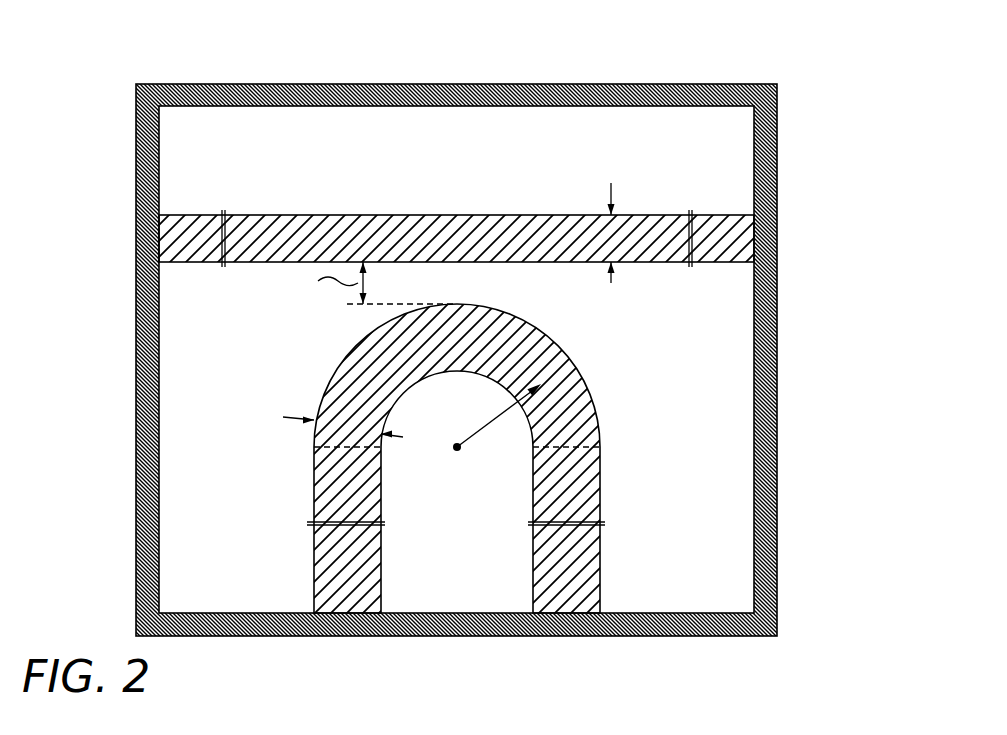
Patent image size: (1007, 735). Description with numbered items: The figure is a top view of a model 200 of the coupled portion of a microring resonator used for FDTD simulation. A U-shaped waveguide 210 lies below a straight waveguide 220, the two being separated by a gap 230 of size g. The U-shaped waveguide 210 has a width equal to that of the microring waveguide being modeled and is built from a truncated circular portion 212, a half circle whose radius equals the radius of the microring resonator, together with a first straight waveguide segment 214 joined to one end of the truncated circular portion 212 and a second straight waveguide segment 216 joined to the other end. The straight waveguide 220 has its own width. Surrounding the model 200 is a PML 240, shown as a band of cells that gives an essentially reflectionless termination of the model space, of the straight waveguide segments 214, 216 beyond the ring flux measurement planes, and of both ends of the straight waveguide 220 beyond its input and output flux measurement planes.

The model of a coupled portion of a microring resonator 200 is at (511, 319).
The U-shaped waveguide 210 is at (478, 458).
The truncated circular portion 212 is at (342, 372).
The first straight waveguide segment 214 is at (314, 572).
The second straight waveguide segment 216 is at (533, 572).
The straight waveguide 220 is at (459, 215).
The gap 230 is at (516, 288).
The PML 240 is at (777, 389).